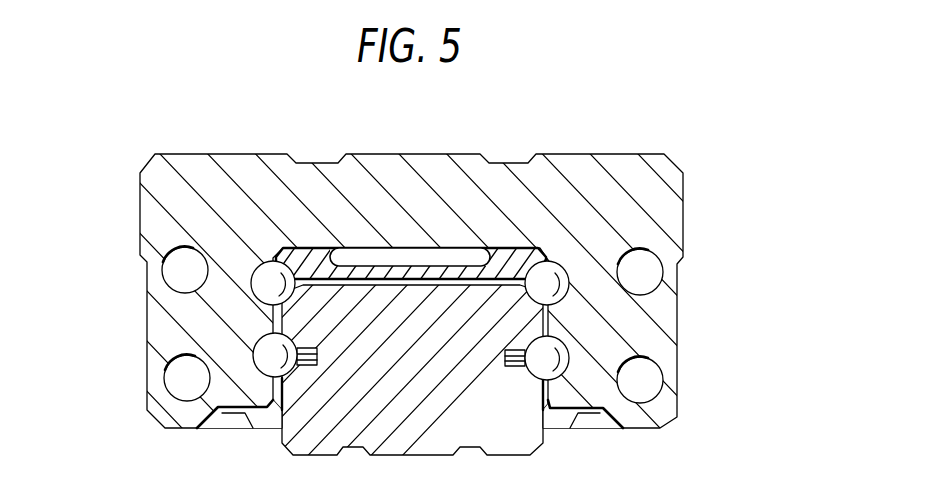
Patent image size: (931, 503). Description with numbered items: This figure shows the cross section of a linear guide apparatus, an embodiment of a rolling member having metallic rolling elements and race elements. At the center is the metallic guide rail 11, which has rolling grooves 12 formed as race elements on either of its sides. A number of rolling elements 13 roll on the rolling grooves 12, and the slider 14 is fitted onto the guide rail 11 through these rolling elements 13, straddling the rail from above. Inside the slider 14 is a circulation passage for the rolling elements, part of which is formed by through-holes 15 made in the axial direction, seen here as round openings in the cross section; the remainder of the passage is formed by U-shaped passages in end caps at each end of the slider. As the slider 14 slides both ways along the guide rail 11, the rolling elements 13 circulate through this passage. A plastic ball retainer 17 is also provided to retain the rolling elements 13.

The guide rail 11 is at (512, 434).
The rolling grooves 12 is at (263, 300).
The rolling elements 13 is at (572, 282).
The slider 14 is at (618, 142).
The through-holes 15 is at (165, 270).
The plastic ball retainer 17 is at (317, 252).